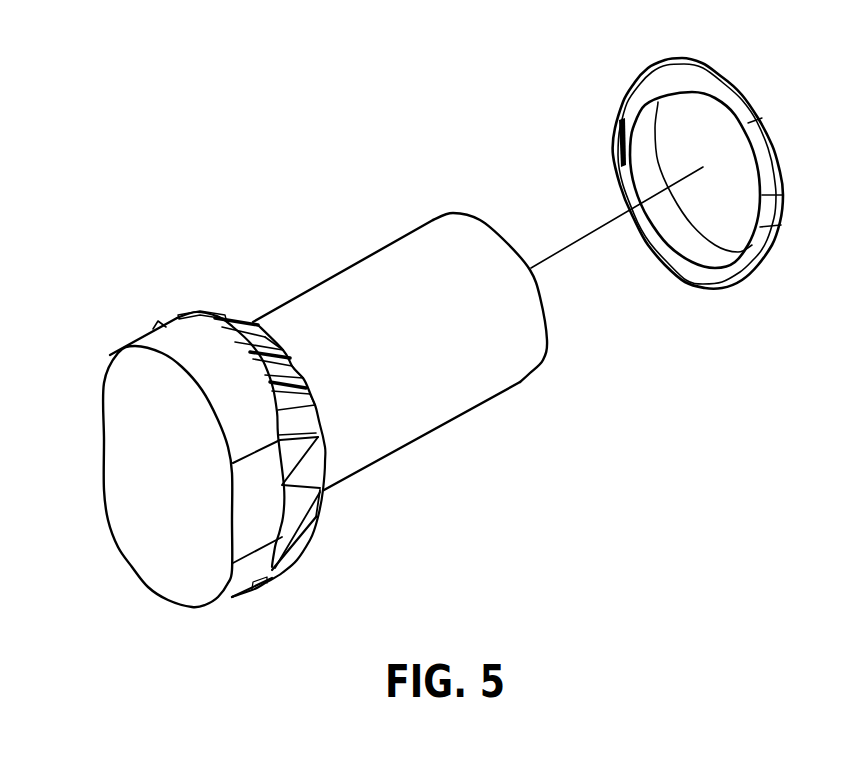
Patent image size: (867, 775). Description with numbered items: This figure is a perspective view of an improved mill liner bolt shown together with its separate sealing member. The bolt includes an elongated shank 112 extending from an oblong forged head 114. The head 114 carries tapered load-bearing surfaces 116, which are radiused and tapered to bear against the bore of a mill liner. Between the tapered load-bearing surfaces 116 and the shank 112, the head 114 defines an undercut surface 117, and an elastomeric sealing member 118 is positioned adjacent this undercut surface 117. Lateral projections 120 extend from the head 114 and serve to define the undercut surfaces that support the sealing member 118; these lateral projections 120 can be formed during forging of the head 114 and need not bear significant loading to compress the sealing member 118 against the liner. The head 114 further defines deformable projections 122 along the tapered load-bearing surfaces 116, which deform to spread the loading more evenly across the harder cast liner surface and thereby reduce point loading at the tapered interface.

The shank 112 is at (422, 237).
The head 114 is at (124, 440).
The tapered load-bearing surfaces 116 is at (196, 311).
The undercut surface 117 is at (277, 335).
The elastomeric sealing member 118 is at (695, 73).
The lateral projections 120 is at (315, 470).
The deformable projections 122 is at (302, 545).